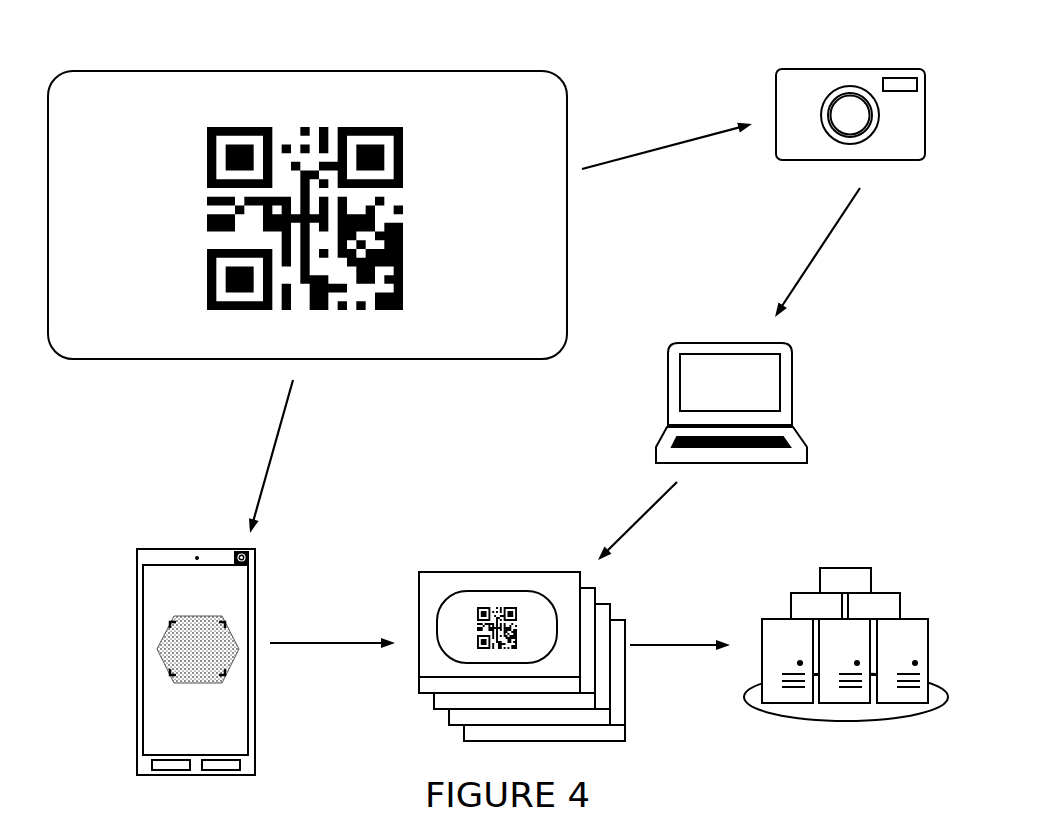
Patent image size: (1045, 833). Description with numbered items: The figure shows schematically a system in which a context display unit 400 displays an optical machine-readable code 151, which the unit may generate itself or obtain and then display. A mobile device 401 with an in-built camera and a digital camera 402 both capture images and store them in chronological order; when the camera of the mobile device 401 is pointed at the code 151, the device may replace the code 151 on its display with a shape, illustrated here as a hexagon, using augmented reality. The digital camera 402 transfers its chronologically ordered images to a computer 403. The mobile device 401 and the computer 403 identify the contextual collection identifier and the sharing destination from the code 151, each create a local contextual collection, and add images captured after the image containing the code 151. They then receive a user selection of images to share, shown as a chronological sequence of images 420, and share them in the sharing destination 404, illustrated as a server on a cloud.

The context display unit 400 is at (528, 333).
The optical machine-readable code 151 is at (353, 127).
The mobile device 401 is at (132, 655).
The digital camera 402 is at (912, 160).
The computer 403 is at (825, 433).
The chronological sequence of images 420 is at (503, 662).
The sharing destination 404 is at (846, 667).